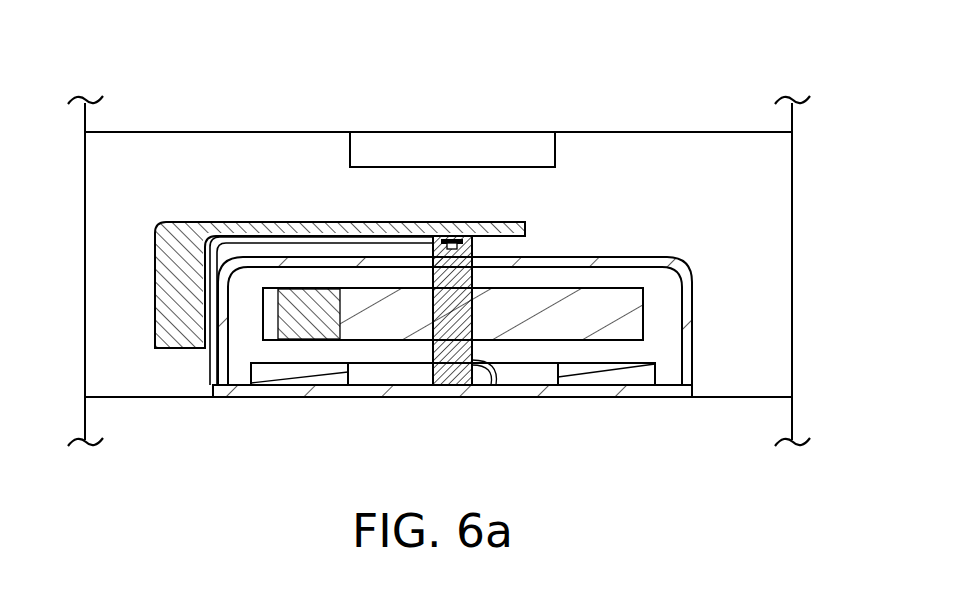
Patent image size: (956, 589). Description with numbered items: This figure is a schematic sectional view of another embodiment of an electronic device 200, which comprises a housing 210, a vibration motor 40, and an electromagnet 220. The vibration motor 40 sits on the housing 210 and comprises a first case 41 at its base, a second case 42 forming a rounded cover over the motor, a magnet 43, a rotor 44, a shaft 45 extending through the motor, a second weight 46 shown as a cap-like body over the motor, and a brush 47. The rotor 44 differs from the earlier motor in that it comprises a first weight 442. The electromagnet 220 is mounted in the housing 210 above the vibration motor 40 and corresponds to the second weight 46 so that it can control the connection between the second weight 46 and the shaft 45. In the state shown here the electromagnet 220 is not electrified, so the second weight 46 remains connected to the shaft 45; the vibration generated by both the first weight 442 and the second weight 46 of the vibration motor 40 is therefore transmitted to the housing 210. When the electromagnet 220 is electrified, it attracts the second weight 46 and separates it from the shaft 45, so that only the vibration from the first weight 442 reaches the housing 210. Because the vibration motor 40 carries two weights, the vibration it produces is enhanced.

The electronic device 200 is at (137, 31).
The housing 210 is at (727, 400).
The electromagnet 220 is at (456, 145).
The vibration motor 40 is at (693, 262).
The first case 41 is at (633, 390).
The second case 42 is at (688, 333).
The magnet 43 is at (580, 380).
The rotor 44 is at (559, 374).
The first weight 442 is at (310, 338).
The shaft 45 is at (443, 384).
The second weight 46 is at (160, 285).
The brush 47 is at (490, 386).